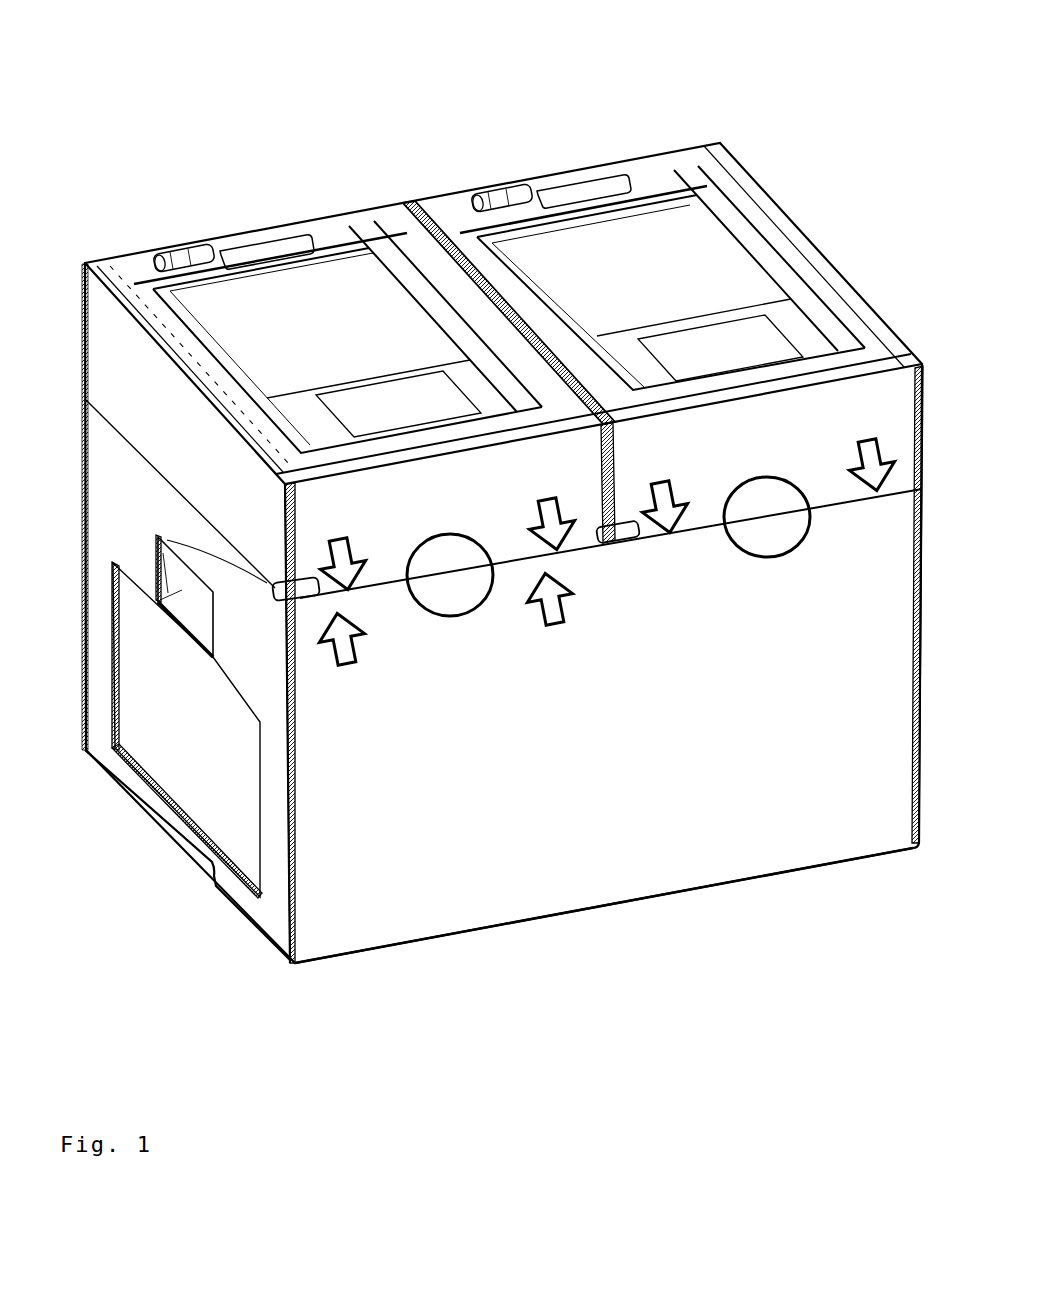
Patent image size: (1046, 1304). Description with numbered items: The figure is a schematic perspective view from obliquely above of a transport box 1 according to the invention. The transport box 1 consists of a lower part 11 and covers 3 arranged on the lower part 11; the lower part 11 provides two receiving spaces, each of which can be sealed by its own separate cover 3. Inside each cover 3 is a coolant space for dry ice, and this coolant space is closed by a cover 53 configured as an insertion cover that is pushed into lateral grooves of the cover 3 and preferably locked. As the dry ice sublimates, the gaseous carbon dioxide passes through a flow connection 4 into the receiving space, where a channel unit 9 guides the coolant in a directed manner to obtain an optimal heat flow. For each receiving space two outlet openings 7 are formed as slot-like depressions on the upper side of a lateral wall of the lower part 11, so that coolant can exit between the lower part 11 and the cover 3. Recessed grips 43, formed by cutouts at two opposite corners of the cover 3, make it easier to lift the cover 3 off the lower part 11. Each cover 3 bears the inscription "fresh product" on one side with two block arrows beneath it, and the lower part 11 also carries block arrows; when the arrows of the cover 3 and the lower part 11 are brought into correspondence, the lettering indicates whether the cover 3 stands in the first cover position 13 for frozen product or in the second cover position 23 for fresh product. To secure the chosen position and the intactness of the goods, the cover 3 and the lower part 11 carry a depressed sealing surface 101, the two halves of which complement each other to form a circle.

The transport box 1 is at (118, 58).
The cover 3 is at (260, 228).
The second cover position 23 is at (272, 204).
The first cover position 13 is at (607, 143).
The cover 53 is at (317, 303).
The depressed sealing surface 101 is at (778, 500).
The outlet opening 7 is at (107, 423).
The recessed grip 43 is at (182, 590).
The flow connection 4 is at (388, 600).
The channel unit 9 is at (458, 778).
The lower part 11 is at (537, 893).